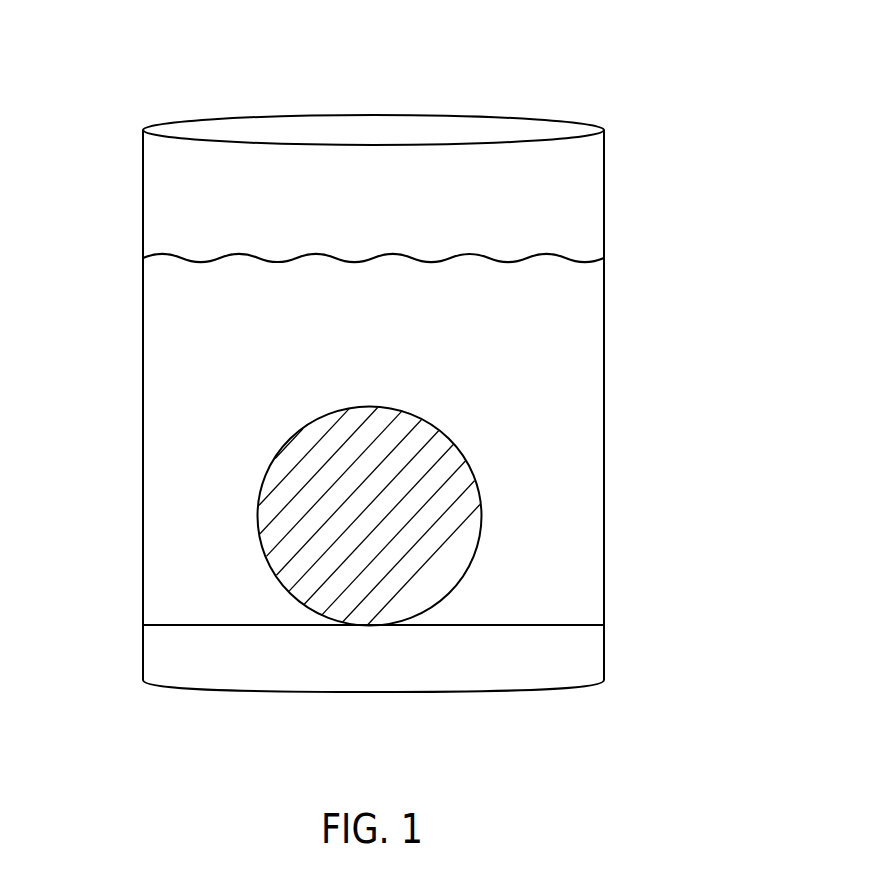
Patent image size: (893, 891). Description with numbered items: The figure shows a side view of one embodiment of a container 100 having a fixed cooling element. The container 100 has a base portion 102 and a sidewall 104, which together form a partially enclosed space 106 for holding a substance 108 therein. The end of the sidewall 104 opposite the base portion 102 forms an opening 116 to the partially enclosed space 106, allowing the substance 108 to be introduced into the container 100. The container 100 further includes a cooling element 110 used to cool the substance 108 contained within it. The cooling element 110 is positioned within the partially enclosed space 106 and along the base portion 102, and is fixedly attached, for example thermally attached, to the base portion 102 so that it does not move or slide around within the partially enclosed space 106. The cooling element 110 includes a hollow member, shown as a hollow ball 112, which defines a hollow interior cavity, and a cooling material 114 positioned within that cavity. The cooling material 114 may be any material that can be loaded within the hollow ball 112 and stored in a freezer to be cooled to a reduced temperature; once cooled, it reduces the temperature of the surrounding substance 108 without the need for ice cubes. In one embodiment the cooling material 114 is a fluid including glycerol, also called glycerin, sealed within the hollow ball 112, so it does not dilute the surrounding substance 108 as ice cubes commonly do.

The container 100 is at (598, 52).
The base portion 102 is at (490, 689).
The sidewall 104 is at (605, 320).
The partially enclosed space 106 is at (266, 192).
The substance 108 is at (202, 258).
The cooling element 110 is at (490, 500).
The hollow ball 112 is at (270, 472).
The cooling material 114 is at (294, 532).
The opening 116 is at (216, 122).